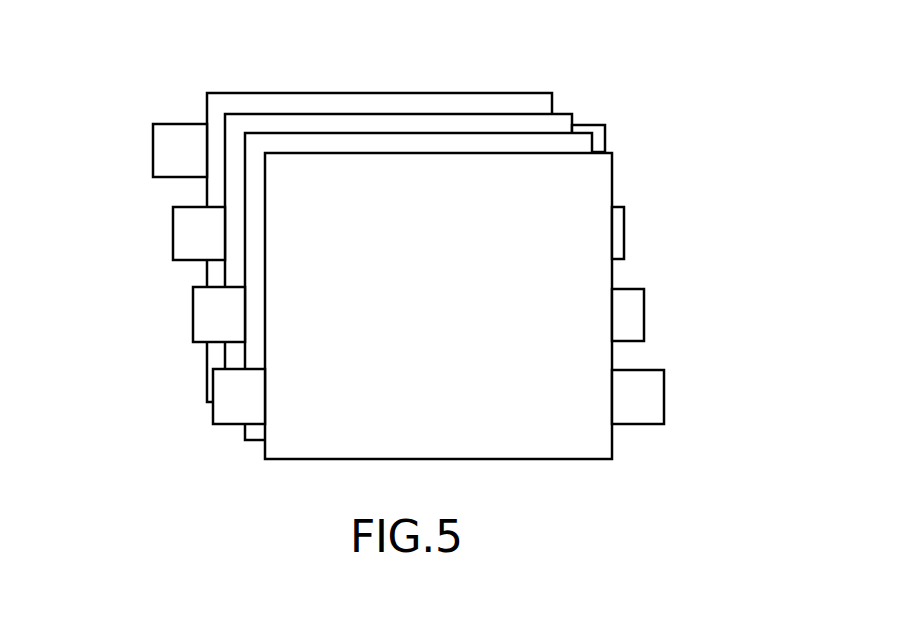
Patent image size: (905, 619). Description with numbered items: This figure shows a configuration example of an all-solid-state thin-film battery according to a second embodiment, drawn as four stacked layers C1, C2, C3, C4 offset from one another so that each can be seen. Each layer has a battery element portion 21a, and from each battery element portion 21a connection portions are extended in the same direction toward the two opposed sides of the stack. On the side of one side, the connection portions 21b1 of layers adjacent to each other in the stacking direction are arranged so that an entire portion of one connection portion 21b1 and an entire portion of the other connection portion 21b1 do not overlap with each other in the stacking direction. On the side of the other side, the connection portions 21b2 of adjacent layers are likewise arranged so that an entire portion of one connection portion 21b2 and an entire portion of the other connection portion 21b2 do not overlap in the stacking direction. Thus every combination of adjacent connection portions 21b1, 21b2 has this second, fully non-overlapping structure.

The first cell (electrode layer) C1 is at (256, 100).
The second cell (electrode layer) C2 is at (298, 118).
The third cell (electrode layer) C3 is at (341, 137).
The fourth cell (electrode layer) C4 is at (439, 265).
The battery element portion 21a is at (580, 432).
The connection portion 21b1 is at (172, 153).
The connection portion 21b2 is at (505, 265).